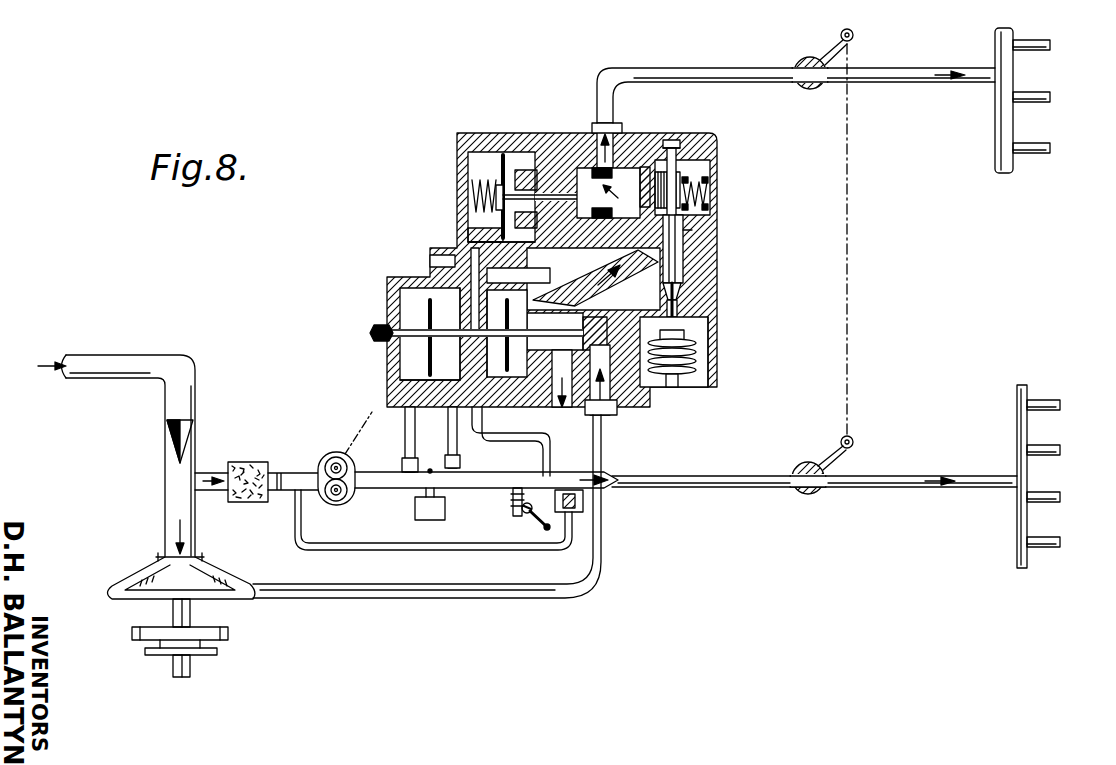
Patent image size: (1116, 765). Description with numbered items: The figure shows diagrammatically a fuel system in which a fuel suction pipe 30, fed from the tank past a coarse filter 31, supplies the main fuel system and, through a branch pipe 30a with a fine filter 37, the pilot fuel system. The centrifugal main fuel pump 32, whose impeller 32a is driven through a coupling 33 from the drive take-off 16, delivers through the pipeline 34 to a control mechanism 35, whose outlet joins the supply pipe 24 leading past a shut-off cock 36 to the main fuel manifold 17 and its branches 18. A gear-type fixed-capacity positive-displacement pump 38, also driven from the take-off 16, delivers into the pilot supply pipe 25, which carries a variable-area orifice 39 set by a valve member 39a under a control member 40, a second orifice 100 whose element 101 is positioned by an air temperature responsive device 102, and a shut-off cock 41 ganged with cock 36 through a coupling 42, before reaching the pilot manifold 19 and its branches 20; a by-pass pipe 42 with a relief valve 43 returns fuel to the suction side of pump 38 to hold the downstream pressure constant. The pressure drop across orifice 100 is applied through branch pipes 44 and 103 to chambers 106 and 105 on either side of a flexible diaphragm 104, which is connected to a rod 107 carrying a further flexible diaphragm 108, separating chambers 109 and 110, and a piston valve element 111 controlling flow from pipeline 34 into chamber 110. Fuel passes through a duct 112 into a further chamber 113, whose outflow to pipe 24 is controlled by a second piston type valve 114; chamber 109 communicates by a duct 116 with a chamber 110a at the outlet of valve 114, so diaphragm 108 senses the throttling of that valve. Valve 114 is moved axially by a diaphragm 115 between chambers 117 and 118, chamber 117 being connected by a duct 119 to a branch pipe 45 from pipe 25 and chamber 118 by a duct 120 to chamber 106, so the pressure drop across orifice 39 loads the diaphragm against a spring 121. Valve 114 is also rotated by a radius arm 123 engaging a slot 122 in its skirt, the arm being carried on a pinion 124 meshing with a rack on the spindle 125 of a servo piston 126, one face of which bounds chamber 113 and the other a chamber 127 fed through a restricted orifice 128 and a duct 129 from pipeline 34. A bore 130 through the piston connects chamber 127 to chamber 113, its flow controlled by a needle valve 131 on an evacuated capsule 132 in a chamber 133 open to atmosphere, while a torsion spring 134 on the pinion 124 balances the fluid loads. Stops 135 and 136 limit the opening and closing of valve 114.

The drive take-off 16 is at (172, 664).
The main fuel manifold 17 is at (995, 152).
The branches 18 is at (1047, 99).
The second manifold 19 is at (998, 476).
The second manifold ports 20 is at (1055, 540).
The main fuel supply pipe 24 is at (936, 84).
The pilot fuel supply pipe 25 is at (960, 489).
The fuel suction pipe 30 is at (197, 368).
The branch pipe 30a is at (215, 472).
The vertical inlet duct 31 is at (166, 440).
The fuel pump 32 is at (128, 578).
The impeller 32a is at (122, 600).
The coupling 33 is at (132, 636).
The pipeline 34 is at (603, 568).
The control mechanism 35 is at (414, 241).
The shut-off cock 36 is at (809, 90).
The fine filter 37 is at (240, 502).
The fixed-capacity positive-displacement pump 38 is at (336, 504).
The variable-area flow-restricting orifice 39 is at (513, 490).
The valve member 39a is at (524, 514).
The control member 40 is at (541, 528).
The shut-off cock 41 is at (804, 463).
The coupling 42 is at (425, 550).
The relief valve 43 is at (583, 501).
The branch pipe 44 is at (417, 430).
The branch pipe 45 is at (549, 441).
The flow-restricting orifice 100 is at (433, 485).
The element 101 is at (426, 490).
The air temperature responsive device 102 is at (418, 514).
The branch pipe 103 is at (346, 459).
The flexible diaphragm 104 is at (433, 329).
The chamber 105 is at (442, 355).
The chamber 106 is at (438, 382).
The rod 107 is at (426, 342).
The further flexible diaphragm 108 is at (548, 404).
The chamber 109 is at (481, 433).
The chamber 110 is at (514, 356).
The passage 110a is at (686, 236).
The piston valve element 111 is at (578, 310).
The duct 112 is at (687, 298).
The further chamber 113 is at (680, 222).
The second piston type valve 114 is at (575, 168).
The diaphragm 115 is at (497, 150).
The duct 116 is at (472, 235).
The chamber 117 is at (480, 158).
The chamber 118 is at (505, 150).
The duct 119 is at (470, 291).
The duct 120 is at (430, 262).
The spring 121 is at (470, 214).
The slot 122 is at (633, 167).
The radius arm 123 is at (652, 185).
The pinion 124 is at (692, 170).
The spindle 125 is at (676, 152).
The servo piston 126 is at (676, 285).
The chamber 127 is at (608, 279).
The restricted orifice 128 is at (650, 401).
The duct 129 is at (615, 398).
The bore 130 is at (676, 256).
The needle valve 131 is at (690, 331).
The evacuated capsule 132 is at (696, 357).
The chamber 133 is at (701, 374).
The torsion spring 134 is at (703, 186).
The stop 135 is at (527, 178).
The stop 136 is at (476, 193).